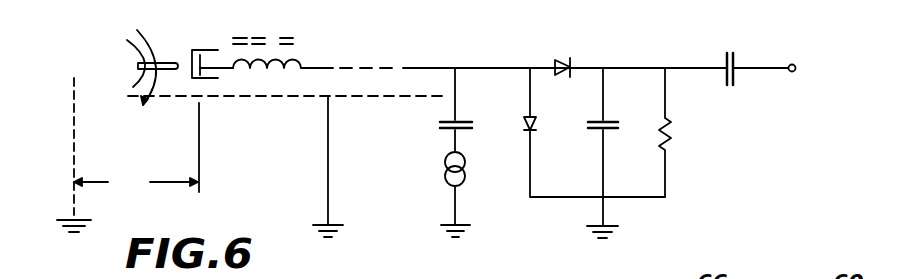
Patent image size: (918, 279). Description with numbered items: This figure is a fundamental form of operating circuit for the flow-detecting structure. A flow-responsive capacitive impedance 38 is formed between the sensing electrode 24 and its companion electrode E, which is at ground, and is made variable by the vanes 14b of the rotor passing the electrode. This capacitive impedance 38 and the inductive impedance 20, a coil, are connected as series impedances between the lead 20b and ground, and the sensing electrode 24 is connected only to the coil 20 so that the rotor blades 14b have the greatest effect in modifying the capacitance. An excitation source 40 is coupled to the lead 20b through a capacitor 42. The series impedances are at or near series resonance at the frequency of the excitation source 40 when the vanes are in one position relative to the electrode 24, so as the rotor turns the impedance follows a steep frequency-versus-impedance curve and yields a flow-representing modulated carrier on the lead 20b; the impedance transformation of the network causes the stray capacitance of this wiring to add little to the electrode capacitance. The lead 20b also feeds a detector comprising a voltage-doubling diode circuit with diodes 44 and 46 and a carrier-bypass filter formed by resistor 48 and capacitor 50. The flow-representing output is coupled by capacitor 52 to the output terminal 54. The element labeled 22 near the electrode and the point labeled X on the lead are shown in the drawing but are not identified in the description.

The vanes 14b is at (137, 56).
The switch contacts 22 is at (216, 30).
The sensing electrode 24 is at (202, 69).
The inductive impedance 20 is at (270, 58).
The lead 20b is at (333, 67).
The flow-responsive capacitive impedance 38 is at (136, 149).
The excitation source 40 is at (444, 172).
The capacitor 42 is at (437, 124).
The diode 44 is at (563, 57).
The diode 46 is at (537, 128).
The resistor 48 is at (672, 132).
The capacitor 50 is at (626, 124).
The capacitor 52 is at (732, 52).
The terminal 54 is at (812, 50).
The companion electrode E is at (63, 93).
The circuit node X is at (640, 66).